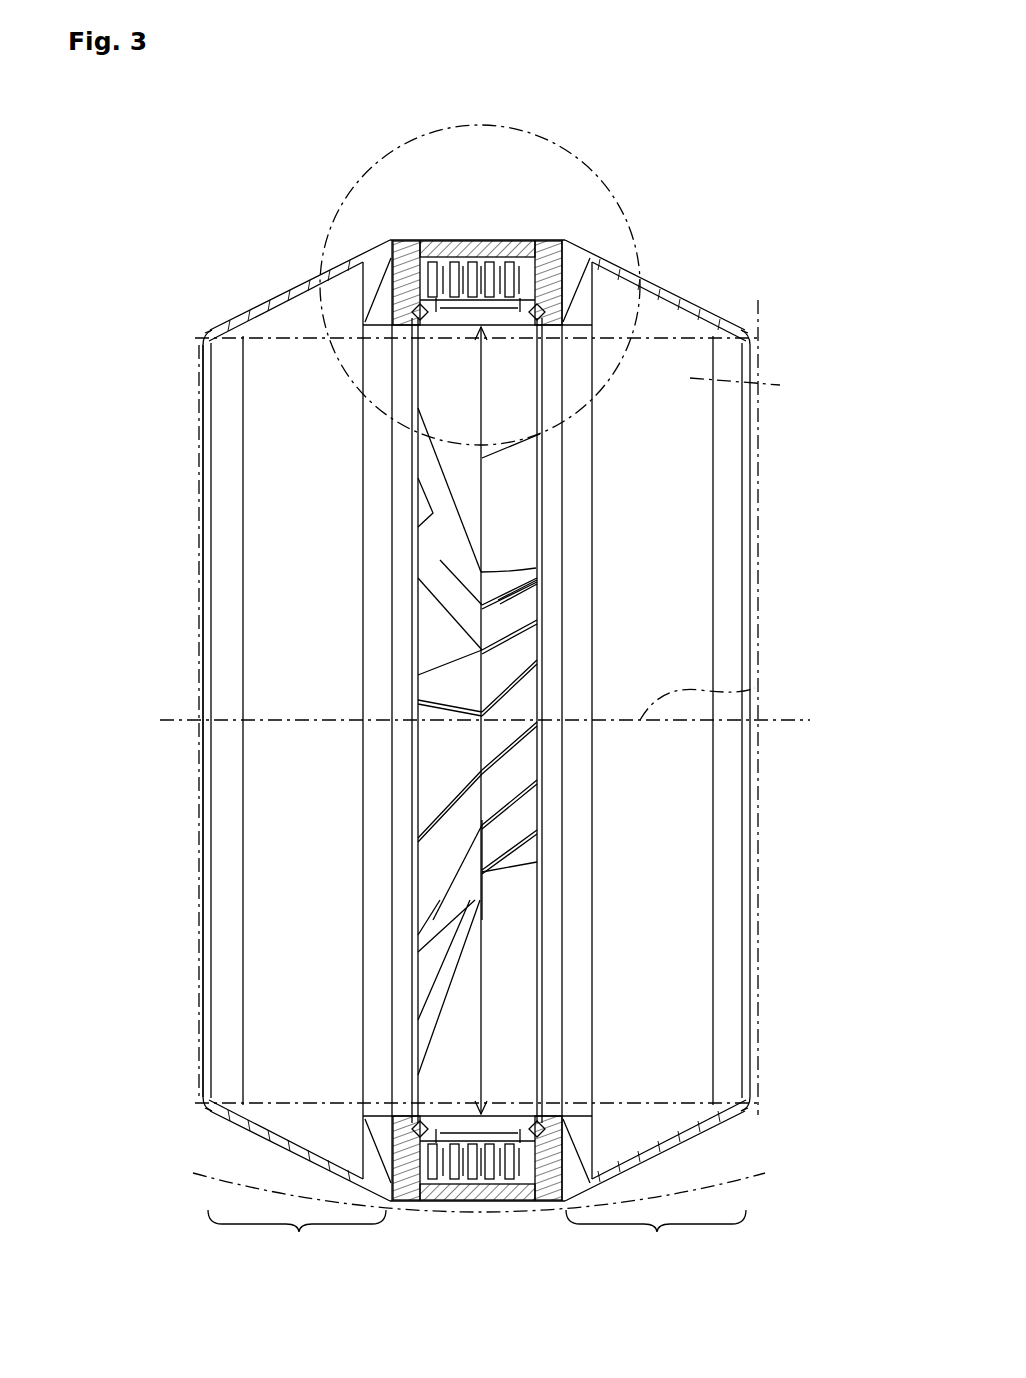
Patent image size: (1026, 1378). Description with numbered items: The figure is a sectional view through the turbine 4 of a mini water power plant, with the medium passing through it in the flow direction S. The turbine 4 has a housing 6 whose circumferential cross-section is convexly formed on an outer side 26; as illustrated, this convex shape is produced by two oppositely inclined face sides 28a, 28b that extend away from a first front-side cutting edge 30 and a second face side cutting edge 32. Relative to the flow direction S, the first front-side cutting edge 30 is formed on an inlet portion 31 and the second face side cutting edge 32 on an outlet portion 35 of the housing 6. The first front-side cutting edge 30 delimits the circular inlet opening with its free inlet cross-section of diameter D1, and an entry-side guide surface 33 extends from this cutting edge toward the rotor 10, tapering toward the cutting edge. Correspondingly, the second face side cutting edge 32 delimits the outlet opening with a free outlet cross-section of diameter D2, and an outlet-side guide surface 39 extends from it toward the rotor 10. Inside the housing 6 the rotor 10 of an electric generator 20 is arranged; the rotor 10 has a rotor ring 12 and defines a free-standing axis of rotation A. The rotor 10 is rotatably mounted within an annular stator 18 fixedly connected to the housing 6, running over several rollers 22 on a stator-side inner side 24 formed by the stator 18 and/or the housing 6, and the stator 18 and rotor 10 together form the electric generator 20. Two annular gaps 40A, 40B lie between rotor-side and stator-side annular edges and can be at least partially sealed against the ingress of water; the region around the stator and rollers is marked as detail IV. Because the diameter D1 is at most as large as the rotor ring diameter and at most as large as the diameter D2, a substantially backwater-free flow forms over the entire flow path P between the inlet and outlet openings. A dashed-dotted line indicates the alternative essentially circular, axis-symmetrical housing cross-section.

The turbine 4 is at (778, 162).
The housing 6 is at (470, 240).
The detail region IV is at (505, 126).
The rotor 10 is at (545, 483).
The rotor ring 12 is at (605, 295).
The annular stator 18 is at (527, 240).
The electric generator 20 is at (383, 234).
The rollers 22 is at (577, 258).
The stator-side inner side 24 is at (448, 328).
The outer side 26 is at (292, 278).
The first inclined face side 28a is at (283, 287).
The second inclined face side 28b is at (683, 288).
The first front-side cutting edge 30 is at (200, 336).
The second face side cutting edge 32 is at (762, 331).
The entry-side guide surface 33 is at (273, 1118).
The outlet portion 35 is at (656, 1236).
The inlet portion 31 is at (297, 1236).
The outlet-side guide surface 39 is at (684, 1122).
The first annular gap 40A is at (418, 822).
The second annular gap 40B is at (540, 826).
The diameter of the free inlet cross-section D1 is at (243, 575).
The diameter of the free outlet cross-section D2 is at (713, 440).
The flow path P is at (745, 395).
The axis of rotation A is at (715, 687).
The flow direction S is at (150, 698).